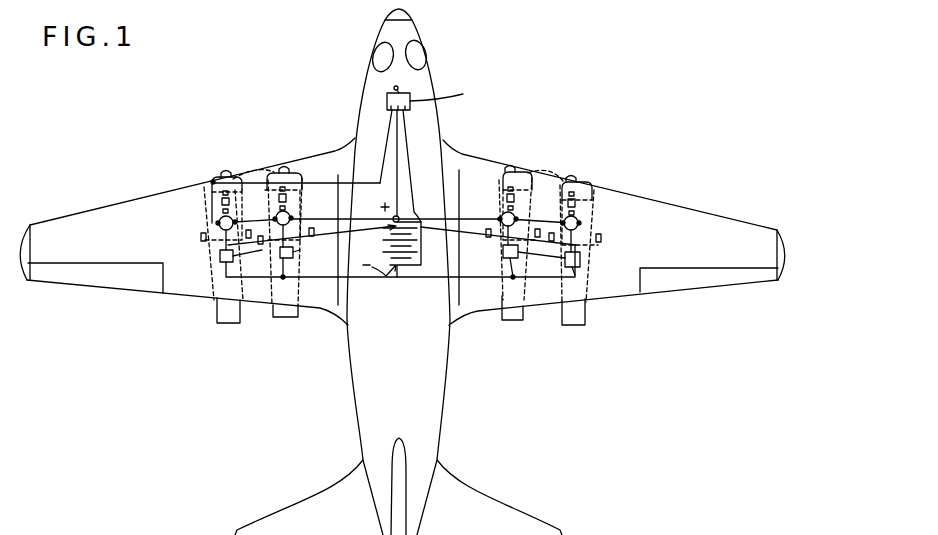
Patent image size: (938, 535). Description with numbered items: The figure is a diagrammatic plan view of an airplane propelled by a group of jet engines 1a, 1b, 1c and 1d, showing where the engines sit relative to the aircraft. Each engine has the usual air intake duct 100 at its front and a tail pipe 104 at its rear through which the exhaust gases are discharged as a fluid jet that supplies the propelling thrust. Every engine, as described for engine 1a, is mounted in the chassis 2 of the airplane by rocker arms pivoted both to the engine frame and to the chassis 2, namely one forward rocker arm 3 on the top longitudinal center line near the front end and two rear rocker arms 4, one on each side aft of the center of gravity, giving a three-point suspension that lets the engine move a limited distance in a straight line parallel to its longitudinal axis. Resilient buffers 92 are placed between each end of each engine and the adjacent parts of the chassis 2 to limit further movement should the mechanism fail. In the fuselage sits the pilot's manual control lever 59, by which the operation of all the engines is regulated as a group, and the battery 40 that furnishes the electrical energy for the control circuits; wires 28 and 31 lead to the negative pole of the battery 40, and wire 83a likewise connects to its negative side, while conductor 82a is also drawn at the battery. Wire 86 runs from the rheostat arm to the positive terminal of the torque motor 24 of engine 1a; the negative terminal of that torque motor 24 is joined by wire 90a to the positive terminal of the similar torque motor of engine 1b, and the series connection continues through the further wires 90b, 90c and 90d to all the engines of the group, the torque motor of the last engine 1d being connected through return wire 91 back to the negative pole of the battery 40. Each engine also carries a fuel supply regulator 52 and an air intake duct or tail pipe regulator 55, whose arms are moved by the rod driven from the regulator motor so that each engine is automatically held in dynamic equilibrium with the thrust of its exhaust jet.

The jet engine 1a is at (213, 182).
The jet engine 1b is at (293, 172).
The jet engine 1c is at (519, 171).
The jet engine 1d is at (591, 182).
The chassis 2 is at (325, 305).
The forward rocker arm 3 is at (398, 165).
The rear rocker arm 4 is at (200, 238).
The torque motor 24 is at (218, 223).
The electric wire 28 is at (303, 278).
The electric wire 31 is at (354, 281).
The battery 40 is at (381, 243).
The fuel supply regulator 52 is at (220, 258).
The air intake duct or tail pipe regulator 55 is at (402, 246).
The pilot's manual control lever 59 is at (413, 86).
The control conductor 82a is at (395, 176).
The wire 83a is at (415, 172).
The wire 86 is at (378, 182).
The wire 90a is at (243, 218).
The junction 90b is at (326, 213).
The junction 90c is at (466, 210).
The junction 90d is at (556, 214).
The return wire 91 is at (494, 273).
The resilient buffers 92 is at (211, 196).
The air intake duct 100 is at (212, 181).
The tail pipe 104 is at (294, 326).